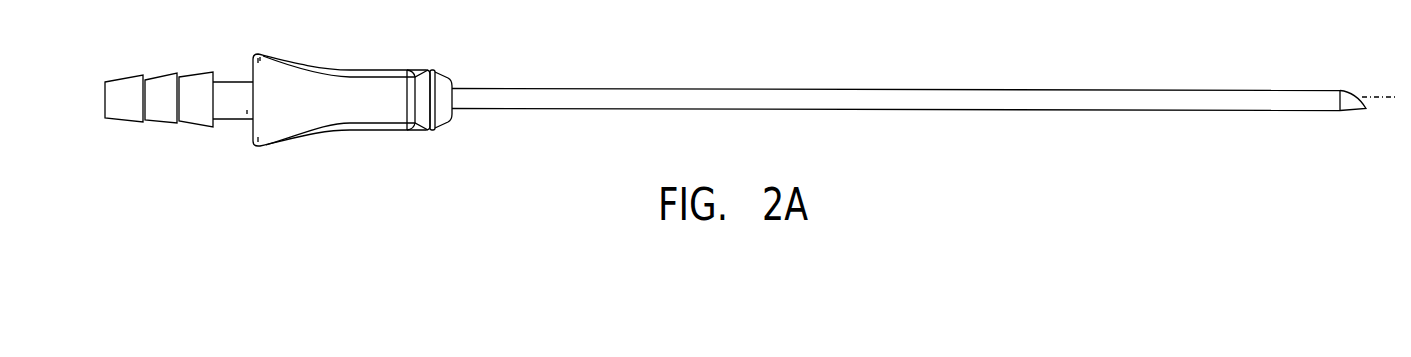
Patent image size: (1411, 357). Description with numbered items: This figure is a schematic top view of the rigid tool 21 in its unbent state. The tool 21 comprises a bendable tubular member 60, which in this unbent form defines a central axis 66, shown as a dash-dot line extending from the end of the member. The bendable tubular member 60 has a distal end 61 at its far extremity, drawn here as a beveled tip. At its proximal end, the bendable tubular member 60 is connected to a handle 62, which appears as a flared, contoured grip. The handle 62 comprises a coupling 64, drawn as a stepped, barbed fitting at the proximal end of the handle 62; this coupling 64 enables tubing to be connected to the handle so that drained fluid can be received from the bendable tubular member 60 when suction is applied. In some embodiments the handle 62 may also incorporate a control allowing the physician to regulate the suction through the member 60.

The rigid tool 21 is at (955, 148).
The bendable tubular member 60 is at (1062, 112).
The distal end 61 is at (1352, 112).
The handle 62 is at (331, 131).
The coupling 64 is at (137, 122).
The central axis 66 is at (1390, 96).